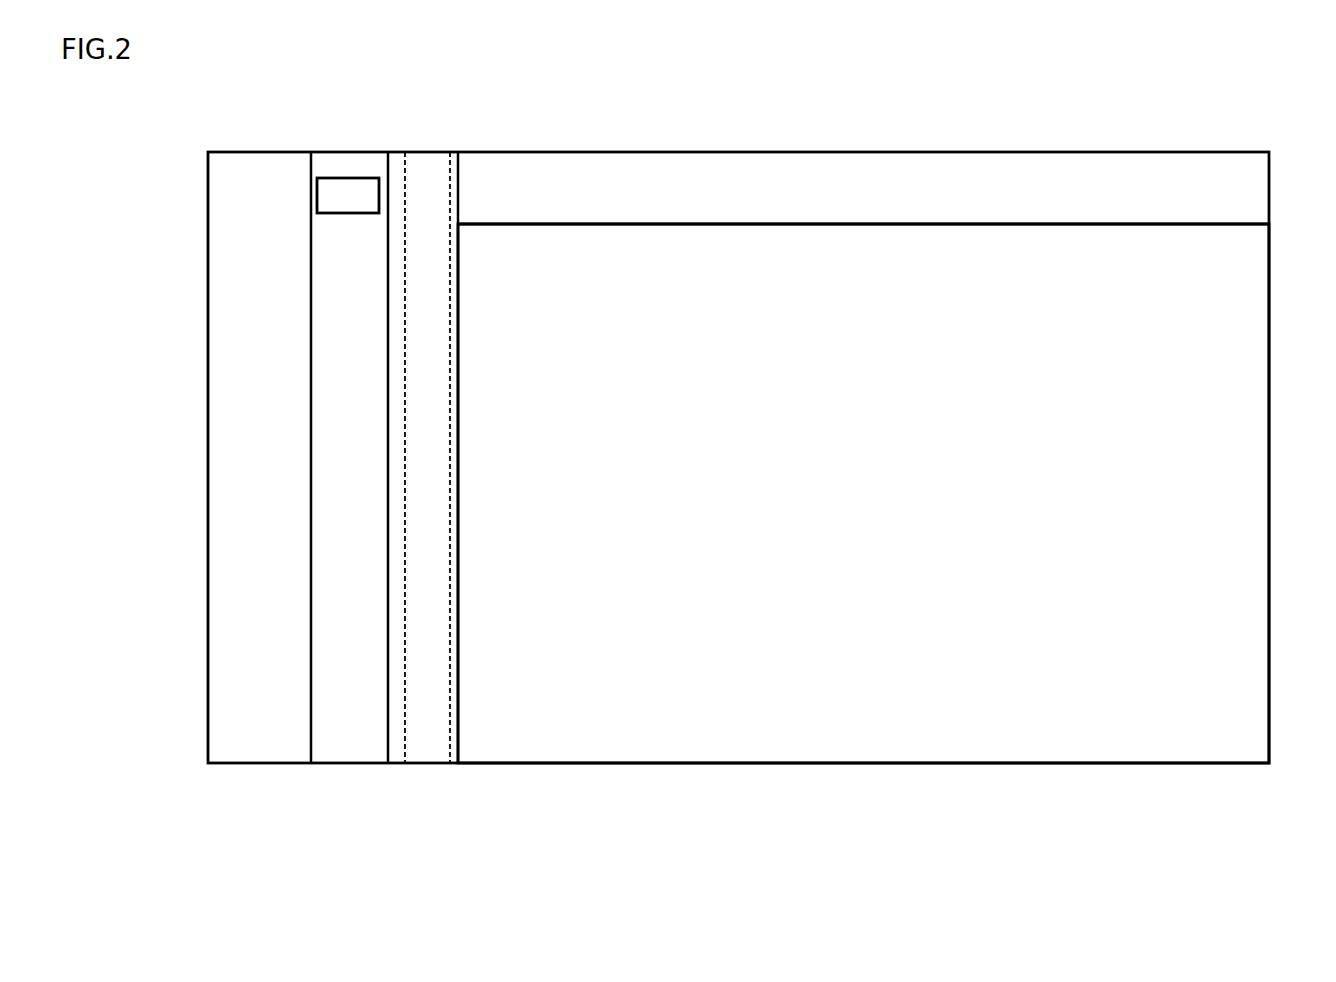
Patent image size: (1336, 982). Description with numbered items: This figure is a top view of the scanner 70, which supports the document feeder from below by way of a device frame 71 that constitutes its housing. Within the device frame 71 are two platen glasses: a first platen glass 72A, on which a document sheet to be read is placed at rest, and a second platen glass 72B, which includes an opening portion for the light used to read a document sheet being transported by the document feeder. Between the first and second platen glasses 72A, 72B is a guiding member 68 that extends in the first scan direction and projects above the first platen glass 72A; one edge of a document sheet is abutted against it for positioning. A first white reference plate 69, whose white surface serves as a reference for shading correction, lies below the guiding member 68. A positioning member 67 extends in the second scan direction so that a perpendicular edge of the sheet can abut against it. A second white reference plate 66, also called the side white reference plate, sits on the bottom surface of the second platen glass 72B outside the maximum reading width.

The scanner 70 is at (1228, 800).
The device frame 71 is at (235, 590).
The first platen glass 72A is at (800, 728).
The second platen glass 72B is at (350, 743).
The second white reference plate 66 is at (346, 190).
The positioning member 67 is at (842, 177).
The guiding member 68 is at (421, 173).
The first white reference plate 69 is at (435, 740).